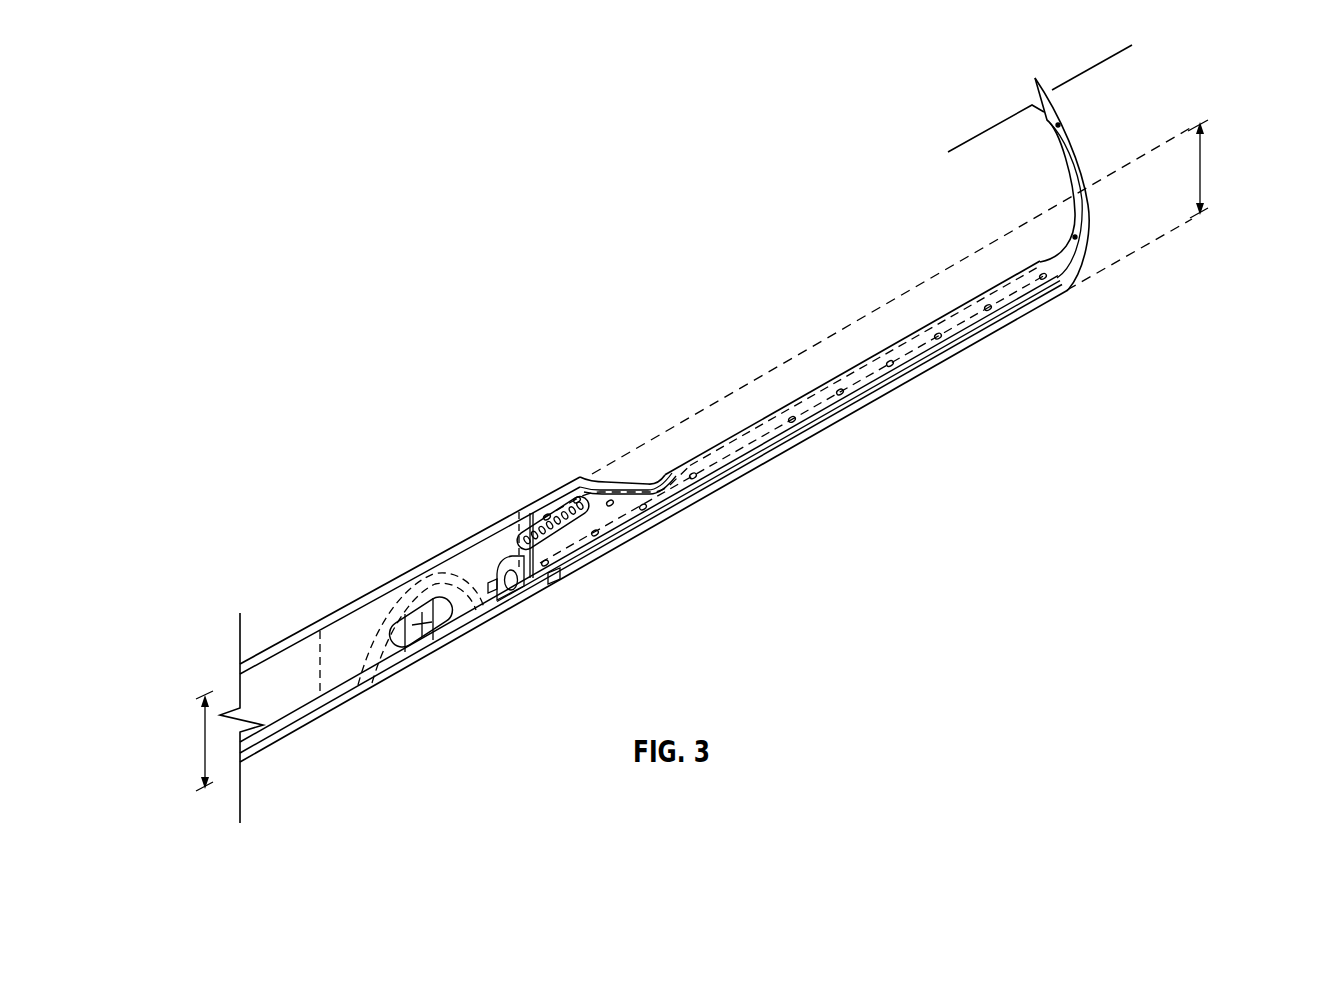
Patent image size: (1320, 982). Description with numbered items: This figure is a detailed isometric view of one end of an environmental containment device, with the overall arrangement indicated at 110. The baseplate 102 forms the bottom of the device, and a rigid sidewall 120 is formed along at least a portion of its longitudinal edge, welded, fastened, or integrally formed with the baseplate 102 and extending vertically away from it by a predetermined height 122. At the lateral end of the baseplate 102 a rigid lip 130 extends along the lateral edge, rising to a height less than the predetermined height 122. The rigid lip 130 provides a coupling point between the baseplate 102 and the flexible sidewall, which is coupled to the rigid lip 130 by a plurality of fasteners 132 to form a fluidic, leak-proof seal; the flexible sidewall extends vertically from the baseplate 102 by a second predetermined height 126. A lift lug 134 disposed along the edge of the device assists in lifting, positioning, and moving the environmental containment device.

The baseplate 102 is at (300, 738).
The rail assembly 110 is at (356, 300).
The rigid sidewall 120 is at (338, 611).
The predetermined height 122 is at (202, 743).
The second predetermined height 126 is at (1200, 168).
The rigid lip 130 is at (866, 376).
The fasteners 132 is at (1046, 277).
The lift lugs 134 is at (440, 613).